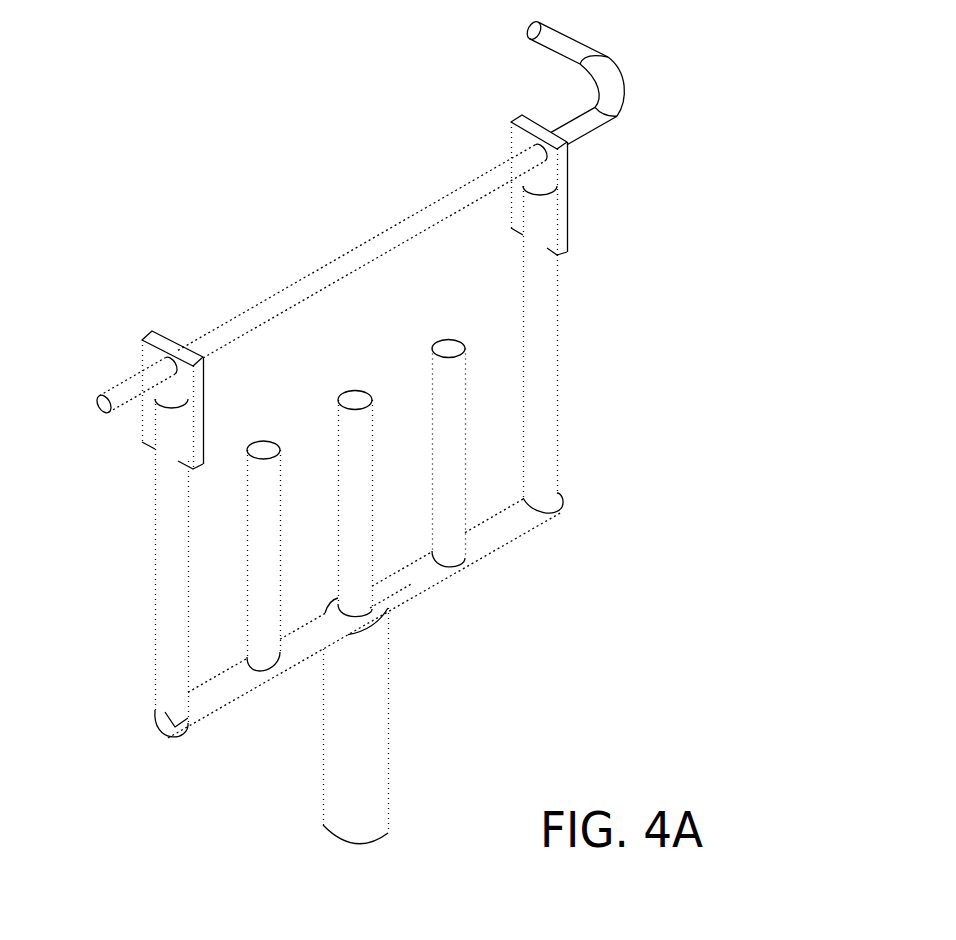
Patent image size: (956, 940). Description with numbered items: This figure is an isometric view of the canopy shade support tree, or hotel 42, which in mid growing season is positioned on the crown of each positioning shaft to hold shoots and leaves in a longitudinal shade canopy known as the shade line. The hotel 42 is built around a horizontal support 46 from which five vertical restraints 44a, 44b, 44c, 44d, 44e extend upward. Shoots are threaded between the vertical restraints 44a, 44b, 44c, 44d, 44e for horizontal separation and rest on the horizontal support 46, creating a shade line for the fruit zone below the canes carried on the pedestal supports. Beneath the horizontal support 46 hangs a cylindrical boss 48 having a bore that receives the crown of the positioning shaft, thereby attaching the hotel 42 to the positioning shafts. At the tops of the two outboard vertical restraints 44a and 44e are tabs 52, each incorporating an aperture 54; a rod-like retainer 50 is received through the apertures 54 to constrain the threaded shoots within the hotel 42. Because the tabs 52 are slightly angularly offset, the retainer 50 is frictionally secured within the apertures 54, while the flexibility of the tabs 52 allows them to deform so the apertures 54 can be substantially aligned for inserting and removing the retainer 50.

The support tree (hotel) 42 is at (614, 295).
The vertical restraint 44a is at (175, 573).
The vertical restraint 44b is at (260, 440).
The vertical restraint 44c is at (355, 393).
The vertical restraint 44d is at (448, 343).
The vertical restraint 44e is at (540, 368).
The horizontal support 46 is at (228, 693).
The cylindrical boss 48 is at (362, 708).
The retainer 50 is at (603, 77).
The tab 52 is at (568, 172).
The aperture 54 is at (540, 158).